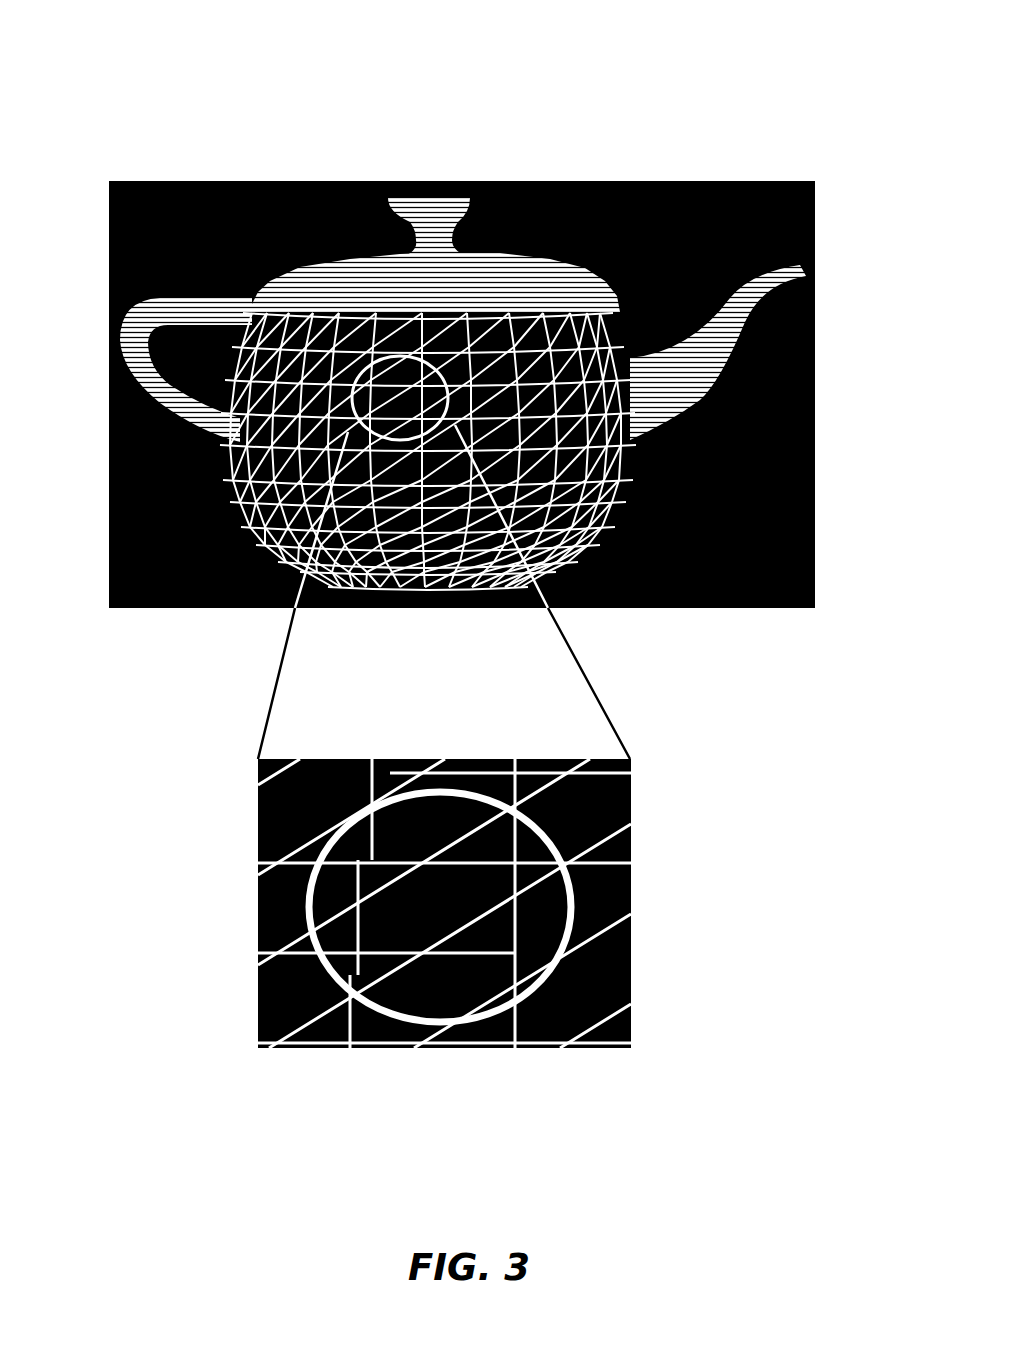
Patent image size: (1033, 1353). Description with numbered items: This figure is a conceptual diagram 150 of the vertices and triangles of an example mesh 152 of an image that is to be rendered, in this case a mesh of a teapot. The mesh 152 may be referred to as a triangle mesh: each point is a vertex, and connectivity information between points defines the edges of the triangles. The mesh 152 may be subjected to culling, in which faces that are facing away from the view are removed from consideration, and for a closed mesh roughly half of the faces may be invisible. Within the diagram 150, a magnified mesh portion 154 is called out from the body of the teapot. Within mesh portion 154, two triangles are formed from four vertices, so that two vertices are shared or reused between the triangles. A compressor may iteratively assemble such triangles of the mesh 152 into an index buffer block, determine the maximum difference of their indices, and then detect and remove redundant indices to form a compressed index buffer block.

The display screen showing rendered image 150 is at (127, 46).
The mesh 152 is at (575, 181).
The mesh portion 154 is at (632, 895).